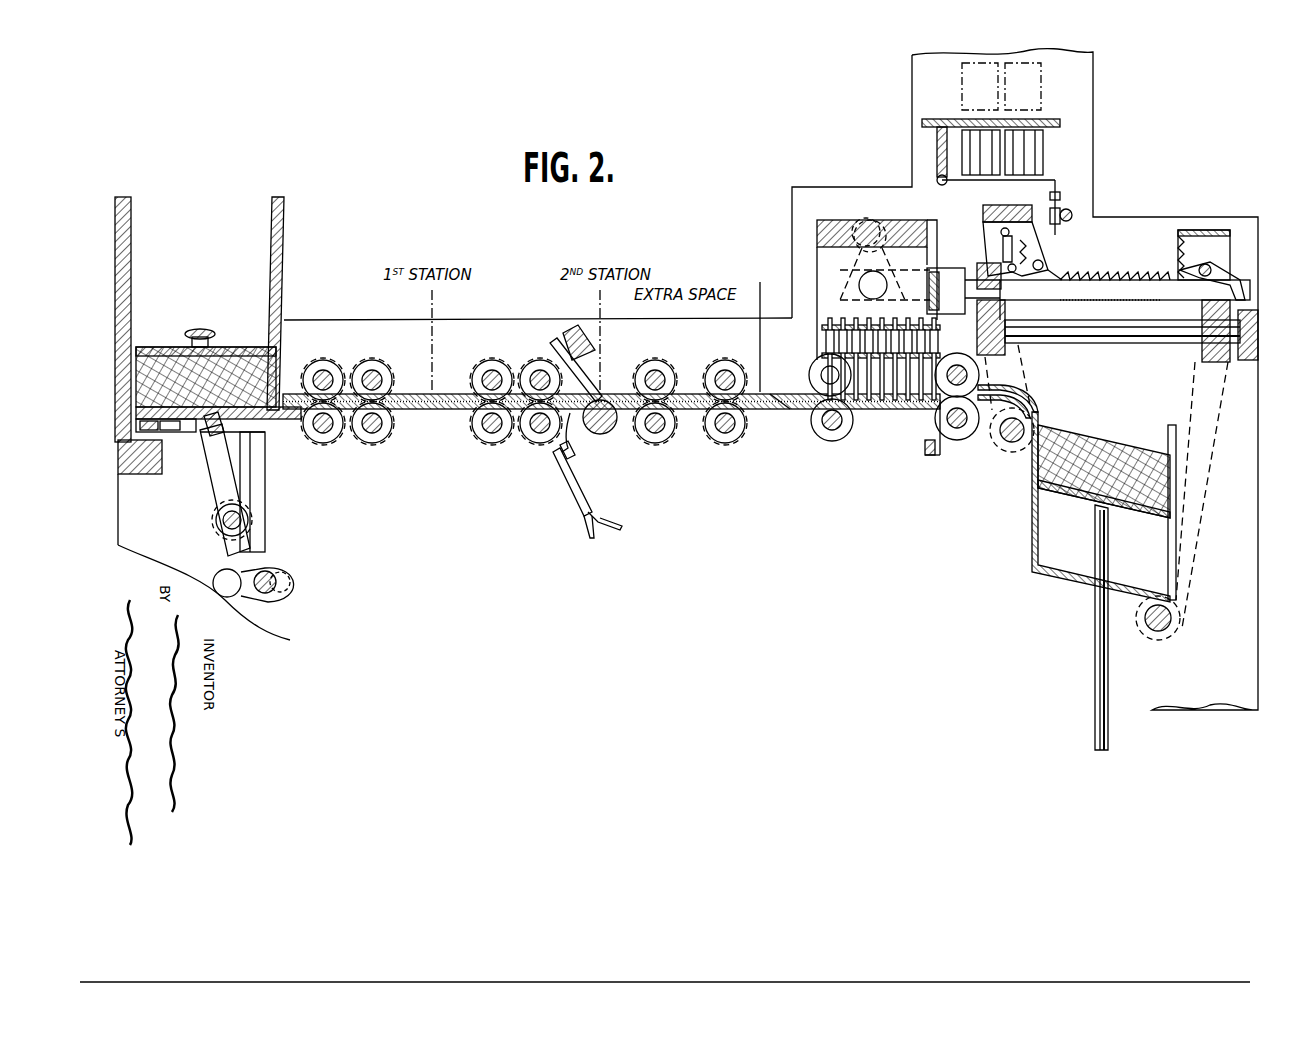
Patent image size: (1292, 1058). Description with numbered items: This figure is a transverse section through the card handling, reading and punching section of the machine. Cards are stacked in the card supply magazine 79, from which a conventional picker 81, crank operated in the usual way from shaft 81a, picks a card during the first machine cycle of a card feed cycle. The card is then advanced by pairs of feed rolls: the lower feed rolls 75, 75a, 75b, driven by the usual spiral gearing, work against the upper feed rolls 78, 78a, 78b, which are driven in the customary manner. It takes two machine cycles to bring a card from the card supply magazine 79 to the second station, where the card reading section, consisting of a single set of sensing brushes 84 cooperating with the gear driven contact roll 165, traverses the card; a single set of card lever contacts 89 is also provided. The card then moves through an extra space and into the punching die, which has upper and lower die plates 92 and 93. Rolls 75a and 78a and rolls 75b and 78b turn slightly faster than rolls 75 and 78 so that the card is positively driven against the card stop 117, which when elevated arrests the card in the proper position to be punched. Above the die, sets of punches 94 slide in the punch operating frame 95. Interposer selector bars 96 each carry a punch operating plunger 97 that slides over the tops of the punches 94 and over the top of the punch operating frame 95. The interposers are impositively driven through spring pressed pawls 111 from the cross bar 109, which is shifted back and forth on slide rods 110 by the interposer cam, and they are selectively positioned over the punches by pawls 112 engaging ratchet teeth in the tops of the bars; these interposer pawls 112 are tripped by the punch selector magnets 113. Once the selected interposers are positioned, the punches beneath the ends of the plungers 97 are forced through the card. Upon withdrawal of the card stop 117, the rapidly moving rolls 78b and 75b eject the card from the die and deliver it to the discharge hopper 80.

The lower feed rolls 75 is at (368, 440).
The lower feed roll 75a is at (832, 441).
The lower feed roll 75b is at (959, 440).
The upper feed rolls 78 is at (372, 366).
The upper feed roll 78a is at (809, 377).
The upper feed roll 78b is at (957, 362).
The card supply magazine 79 is at (230, 356).
The discharge hopper 80 is at (1100, 440).
The picker 81 is at (196, 424).
The shaft 81a is at (265, 590).
The sensing brushes 84 is at (590, 395).
The card lever contacts 89 is at (576, 460).
The upper die plate 92 is at (778, 409).
The lower die plate 93 is at (800, 410).
The punches 94 is at (836, 347).
The punch operating frame 95 is at (893, 230).
The interposer selector bars 96 is at (1120, 290).
The punch operating plunger 97 is at (940, 272).
The cross bar 109 is at (1205, 308).
The slide rods 110 is at (1093, 344).
The spring pressed pawls 111 is at (1215, 262).
The pawls 112 is at (1048, 272).
The punch selector magnets 113 is at (1040, 155).
The card stop 117 is at (937, 428).
The contact roll 165 is at (606, 428).